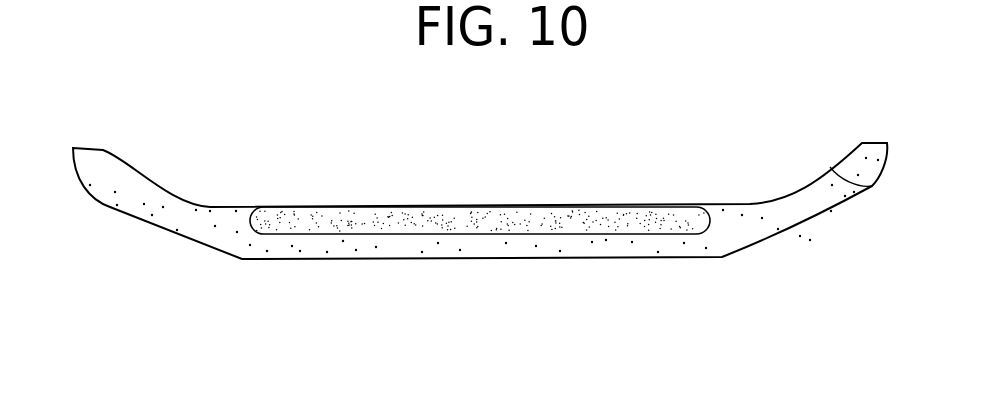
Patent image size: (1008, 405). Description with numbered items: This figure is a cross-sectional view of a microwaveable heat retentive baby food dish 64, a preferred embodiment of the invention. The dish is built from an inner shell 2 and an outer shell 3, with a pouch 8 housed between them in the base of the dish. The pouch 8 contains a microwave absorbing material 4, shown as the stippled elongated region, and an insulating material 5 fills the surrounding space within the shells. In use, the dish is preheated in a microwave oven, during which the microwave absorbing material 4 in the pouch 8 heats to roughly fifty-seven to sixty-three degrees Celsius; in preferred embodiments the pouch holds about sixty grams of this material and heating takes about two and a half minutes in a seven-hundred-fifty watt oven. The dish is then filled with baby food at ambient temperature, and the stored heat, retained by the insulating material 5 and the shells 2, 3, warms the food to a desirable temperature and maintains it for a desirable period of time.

The microwaveable heat retentive baby food dish 64 is at (632, 173).
The inner shell 2 is at (872, 186).
The outer shell 3 is at (825, 215).
The microwave absorbing material 4 is at (562, 232).
The pouch 8 is at (460, 233).
The insulating material 5 is at (717, 237).